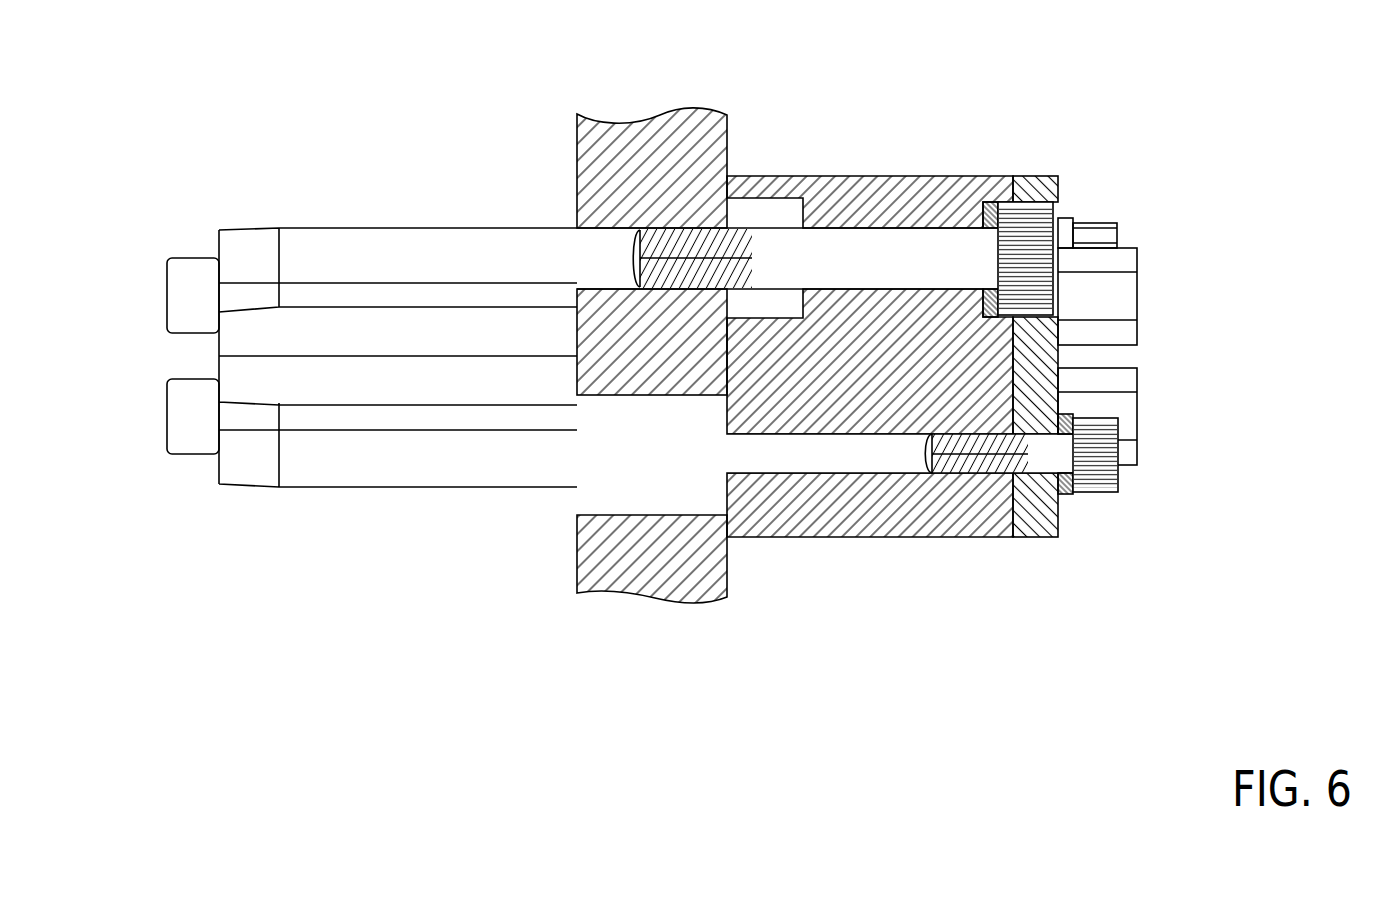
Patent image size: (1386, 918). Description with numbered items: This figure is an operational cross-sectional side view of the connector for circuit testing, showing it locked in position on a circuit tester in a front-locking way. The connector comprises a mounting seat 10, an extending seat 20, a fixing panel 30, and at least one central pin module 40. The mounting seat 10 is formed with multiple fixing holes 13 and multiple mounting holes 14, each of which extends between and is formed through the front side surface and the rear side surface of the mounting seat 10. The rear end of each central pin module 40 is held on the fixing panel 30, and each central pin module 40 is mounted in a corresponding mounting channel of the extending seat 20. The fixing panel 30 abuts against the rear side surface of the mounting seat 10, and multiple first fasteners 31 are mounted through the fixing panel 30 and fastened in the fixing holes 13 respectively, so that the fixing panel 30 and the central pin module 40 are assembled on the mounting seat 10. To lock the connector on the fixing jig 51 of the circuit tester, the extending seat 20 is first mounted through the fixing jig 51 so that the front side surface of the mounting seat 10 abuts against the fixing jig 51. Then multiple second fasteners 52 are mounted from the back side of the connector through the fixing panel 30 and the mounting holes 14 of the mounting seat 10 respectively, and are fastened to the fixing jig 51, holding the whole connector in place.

The mounting seat 10 is at (958, 193).
The fixing hole 13 is at (843, 468).
The mounting hole 14 is at (838, 240).
The extending seat 20 is at (414, 465).
The fixing panel 30 is at (1037, 507).
The first fastener 31 is at (1050, 455).
The central pin module 40 is at (156, 298).
The fixing jig 51 is at (660, 158).
The second fastener 52 is at (907, 258).